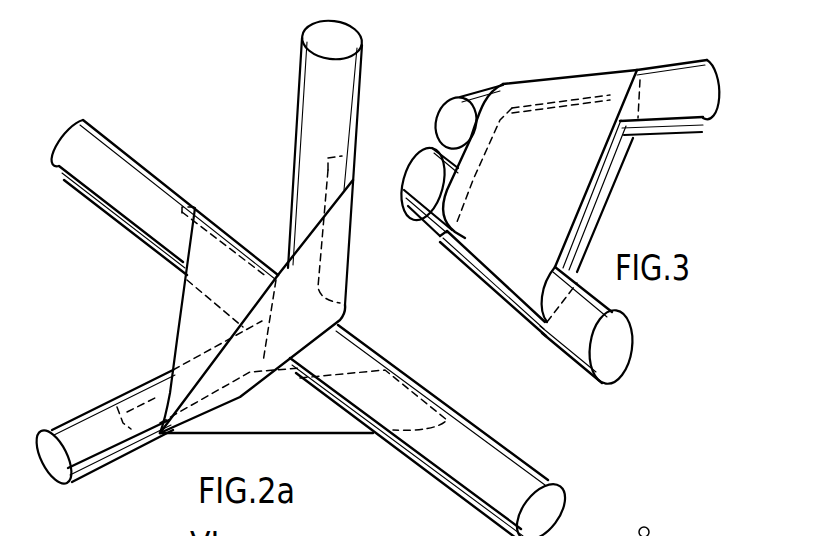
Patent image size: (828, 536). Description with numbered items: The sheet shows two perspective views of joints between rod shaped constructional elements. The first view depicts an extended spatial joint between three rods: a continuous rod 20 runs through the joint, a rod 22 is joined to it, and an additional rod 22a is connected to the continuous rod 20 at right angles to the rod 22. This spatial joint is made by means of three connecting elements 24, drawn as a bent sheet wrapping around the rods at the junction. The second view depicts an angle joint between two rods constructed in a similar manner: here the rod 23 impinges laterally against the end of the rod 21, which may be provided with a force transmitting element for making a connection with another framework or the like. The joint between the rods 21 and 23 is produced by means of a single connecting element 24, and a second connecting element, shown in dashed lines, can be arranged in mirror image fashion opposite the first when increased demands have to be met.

In FIG. 2a, the continuous rod 20 is at (146, 188).
In FIG. 3, the rod 21 is at (424, 190).
In FIG. 2a, the rod 22 is at (88, 418).
In FIG. 2a, the additional rod 22a is at (308, 98).
In FIG. 3, the rod 23 is at (455, 120).
In FIG. 2a, the connecting element 24 is at (287, 237).
In FIG. 3, the connecting element 24 is at (592, 192).